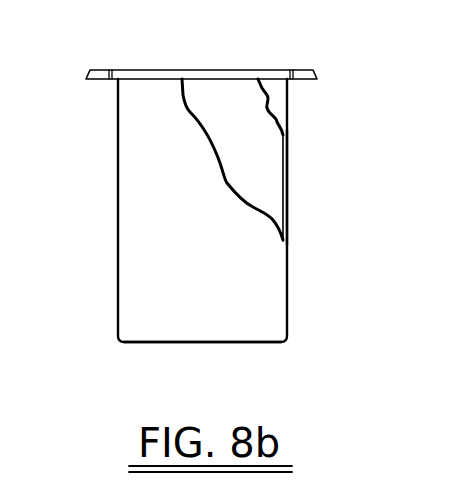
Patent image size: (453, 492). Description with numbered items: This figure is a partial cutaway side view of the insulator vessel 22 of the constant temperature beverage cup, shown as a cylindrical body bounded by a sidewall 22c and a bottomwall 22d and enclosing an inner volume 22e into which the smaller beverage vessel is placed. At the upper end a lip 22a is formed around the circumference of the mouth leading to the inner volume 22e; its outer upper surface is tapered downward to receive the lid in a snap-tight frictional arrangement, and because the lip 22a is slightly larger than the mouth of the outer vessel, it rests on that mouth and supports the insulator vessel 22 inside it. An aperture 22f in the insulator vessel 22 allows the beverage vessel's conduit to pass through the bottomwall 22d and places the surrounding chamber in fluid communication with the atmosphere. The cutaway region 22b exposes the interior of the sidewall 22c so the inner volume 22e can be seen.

The insulator vessel 22 is at (118, 187).
The lip 22a is at (313, 70).
The right tear line 22b is at (225, 79).
The sidewall 22c is at (287, 190).
The bottomwall 22d is at (243, 342).
The inner volume 22e is at (210, 113).
The aperture 22f is at (111, 68).